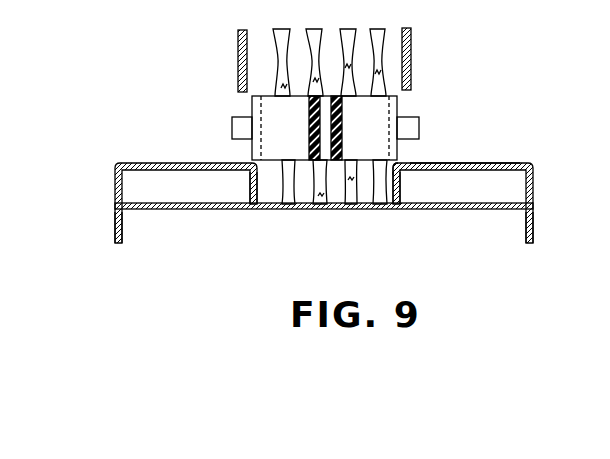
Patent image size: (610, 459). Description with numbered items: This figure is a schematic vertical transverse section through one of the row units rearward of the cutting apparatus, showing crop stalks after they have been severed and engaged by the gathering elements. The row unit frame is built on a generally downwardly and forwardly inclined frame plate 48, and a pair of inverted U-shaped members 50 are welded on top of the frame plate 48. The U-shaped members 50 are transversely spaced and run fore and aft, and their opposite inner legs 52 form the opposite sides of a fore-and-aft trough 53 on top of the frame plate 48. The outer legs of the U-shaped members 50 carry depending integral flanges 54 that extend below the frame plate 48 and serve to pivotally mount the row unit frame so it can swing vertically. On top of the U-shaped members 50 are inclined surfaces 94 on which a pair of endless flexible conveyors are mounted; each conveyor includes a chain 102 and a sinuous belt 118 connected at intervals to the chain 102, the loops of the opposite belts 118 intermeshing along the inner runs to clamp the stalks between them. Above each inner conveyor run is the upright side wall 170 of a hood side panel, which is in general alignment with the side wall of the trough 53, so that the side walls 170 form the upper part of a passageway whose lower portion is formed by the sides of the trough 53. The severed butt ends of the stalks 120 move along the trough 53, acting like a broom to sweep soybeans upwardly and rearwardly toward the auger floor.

The upright side wall 170 is at (241, 42).
The sinuous belt 118 is at (252, 101).
The conveyor chain 102 is at (236, 129).
The inverted U-shaped member 50 is at (164, 163).
The frame plate 48 is at (428, 210).
The inner leg 52 is at (250, 184).
The depending flange 54 is at (115, 223).
The trough 53 is at (396, 163).
The inclined surface 94 is at (458, 163).
The severed butt ends of the stalks 120 is at (356, 192).